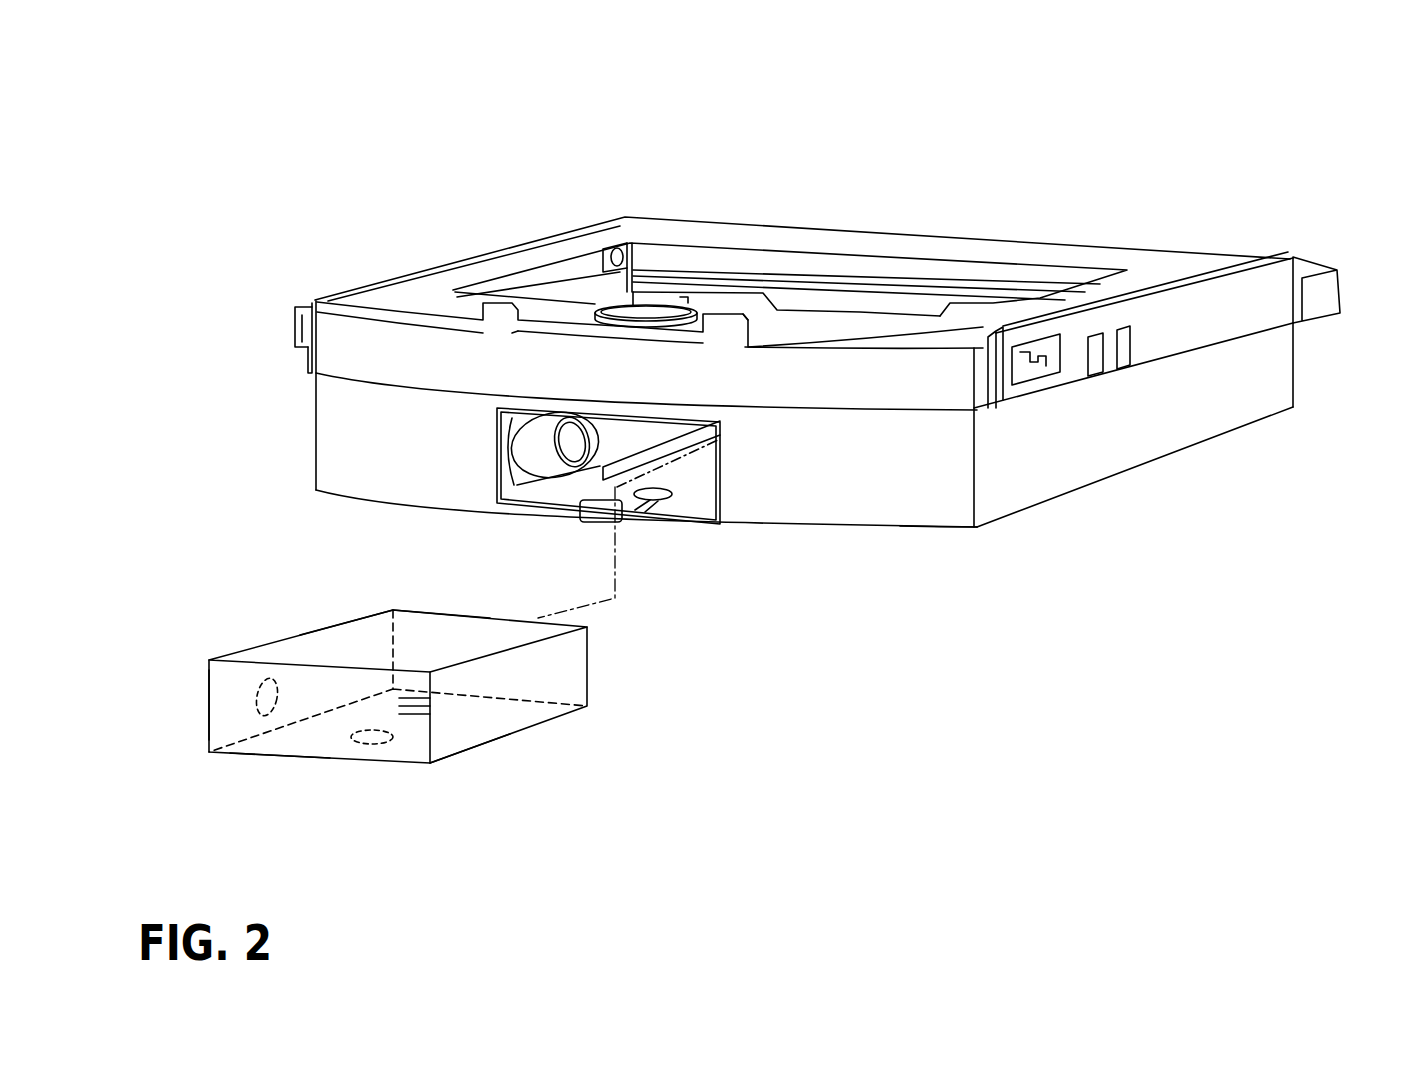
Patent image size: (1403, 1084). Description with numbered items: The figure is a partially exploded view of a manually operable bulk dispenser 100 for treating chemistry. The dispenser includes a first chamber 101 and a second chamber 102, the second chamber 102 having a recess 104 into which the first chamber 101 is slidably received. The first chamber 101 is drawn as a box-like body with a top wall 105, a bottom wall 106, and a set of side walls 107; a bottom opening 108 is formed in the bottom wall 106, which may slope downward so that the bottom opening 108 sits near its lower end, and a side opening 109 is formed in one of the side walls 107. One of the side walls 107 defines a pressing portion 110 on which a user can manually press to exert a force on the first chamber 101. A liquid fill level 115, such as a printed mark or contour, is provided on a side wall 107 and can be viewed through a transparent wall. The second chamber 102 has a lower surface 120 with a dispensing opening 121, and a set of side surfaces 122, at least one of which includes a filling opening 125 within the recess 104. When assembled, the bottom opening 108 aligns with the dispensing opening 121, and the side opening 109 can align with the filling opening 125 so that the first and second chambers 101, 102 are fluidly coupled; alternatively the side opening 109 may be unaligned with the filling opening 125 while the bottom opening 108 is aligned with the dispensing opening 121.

The manually operable bulk dispenser 100 is at (288, 138).
The first chamber 101 is at (267, 627).
The second chamber 102 is at (225, 303).
The recess 104 is at (692, 472).
The top wall 105 is at (448, 637).
The bottom wall 106 is at (410, 763).
The side walls 107 is at (208, 678).
The bottom opening 108 is at (383, 760).
The side opening 109 is at (255, 705).
The pressing portion 110 is at (280, 757).
The liquid fill level 115 is at (437, 710).
The lower surface 120 is at (915, 528).
The dispensing opening 121 is at (650, 500).
The side surfaces 122 is at (317, 442).
The filling opening 125 is at (583, 418).